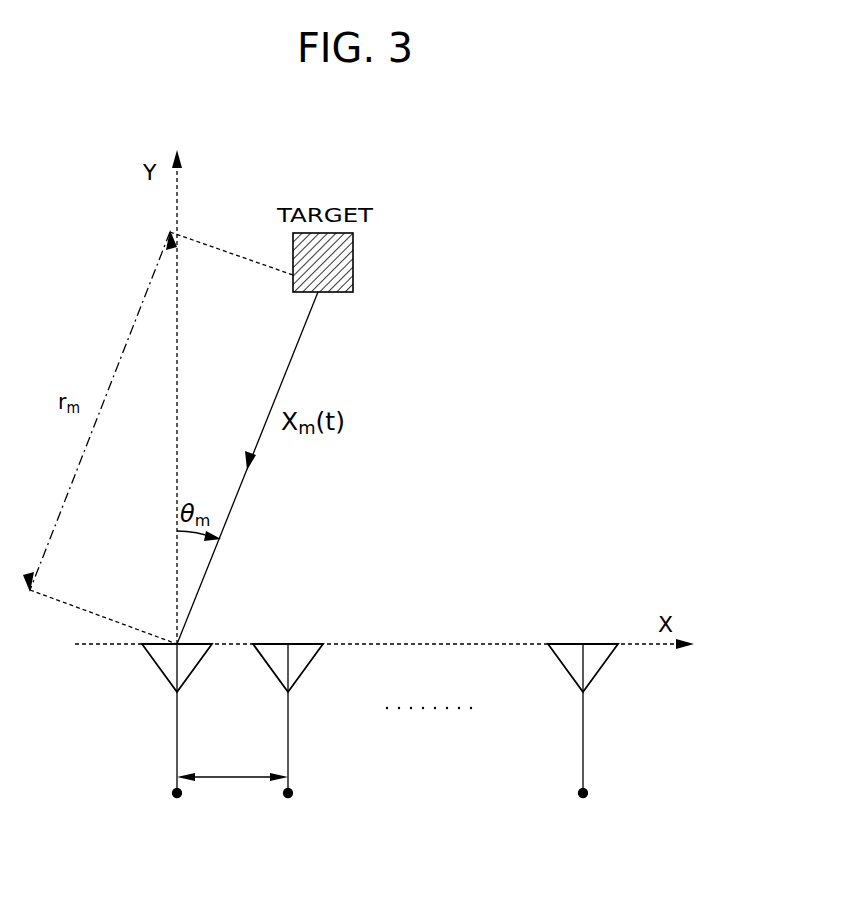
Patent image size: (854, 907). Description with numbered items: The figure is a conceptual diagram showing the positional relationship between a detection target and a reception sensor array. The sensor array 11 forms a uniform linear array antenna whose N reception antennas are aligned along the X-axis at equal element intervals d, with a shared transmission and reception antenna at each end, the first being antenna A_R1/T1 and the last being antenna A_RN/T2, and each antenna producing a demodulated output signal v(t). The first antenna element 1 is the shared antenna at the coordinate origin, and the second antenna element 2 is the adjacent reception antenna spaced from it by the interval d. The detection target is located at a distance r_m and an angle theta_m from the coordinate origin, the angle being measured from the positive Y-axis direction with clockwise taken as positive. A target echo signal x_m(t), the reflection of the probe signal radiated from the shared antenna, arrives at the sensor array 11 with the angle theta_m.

The array antenna 11 is at (457, 744).
The first antenna element A_R1/T1 1 is at (198, 744).
The second antenna element A_R2 2 is at (296, 744).